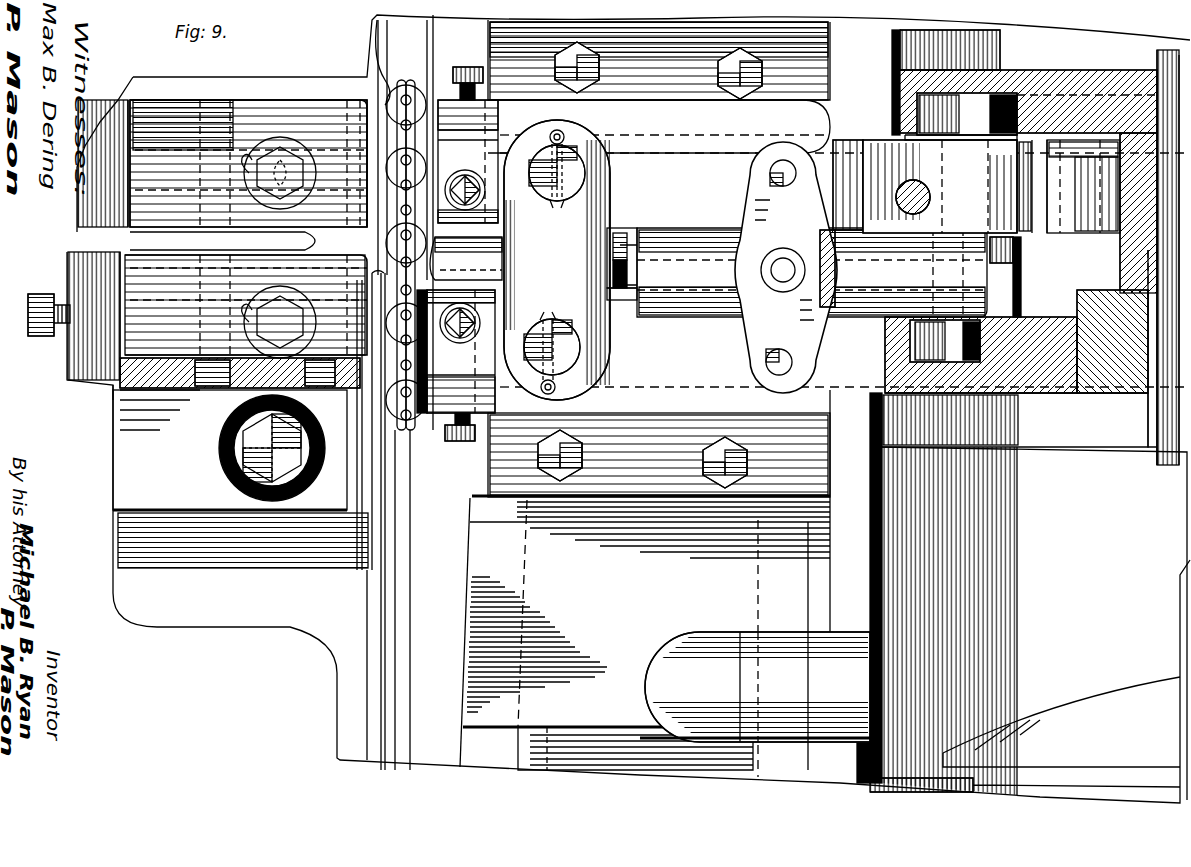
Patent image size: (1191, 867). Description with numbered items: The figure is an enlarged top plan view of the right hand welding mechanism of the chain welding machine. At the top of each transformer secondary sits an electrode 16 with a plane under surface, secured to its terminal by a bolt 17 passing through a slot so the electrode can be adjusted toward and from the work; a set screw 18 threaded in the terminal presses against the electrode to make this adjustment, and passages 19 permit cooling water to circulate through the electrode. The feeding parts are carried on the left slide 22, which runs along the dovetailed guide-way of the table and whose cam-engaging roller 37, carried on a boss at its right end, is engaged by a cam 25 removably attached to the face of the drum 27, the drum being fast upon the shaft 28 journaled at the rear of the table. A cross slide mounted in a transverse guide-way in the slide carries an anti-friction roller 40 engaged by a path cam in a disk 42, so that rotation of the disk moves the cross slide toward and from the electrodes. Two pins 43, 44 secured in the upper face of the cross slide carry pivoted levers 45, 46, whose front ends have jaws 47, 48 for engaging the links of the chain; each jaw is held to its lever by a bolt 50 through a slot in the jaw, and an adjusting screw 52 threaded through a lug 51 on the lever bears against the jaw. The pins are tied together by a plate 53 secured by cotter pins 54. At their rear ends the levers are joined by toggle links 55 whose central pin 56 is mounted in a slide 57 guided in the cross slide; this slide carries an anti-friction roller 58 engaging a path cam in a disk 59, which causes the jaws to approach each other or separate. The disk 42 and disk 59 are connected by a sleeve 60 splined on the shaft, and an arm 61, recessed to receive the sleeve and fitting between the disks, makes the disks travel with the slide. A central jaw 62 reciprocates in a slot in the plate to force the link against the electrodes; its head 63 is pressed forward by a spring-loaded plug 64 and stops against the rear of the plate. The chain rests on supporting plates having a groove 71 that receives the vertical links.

The electrode 16 is at (158, 120).
The bolt 17 is at (285, 150).
The set screw 18 is at (32, 336).
The passages 19 is at (235, 115).
The left slide 22 is at (475, 580).
The cam 25 is at (1090, 692).
The drum 27 is at (930, 542).
The shaft 28 is at (1155, 437).
The cam-engaging roller 37 is at (845, 645).
The anti-friction roller 40 is at (980, 110).
The disk 42 is at (1095, 90).
The pin 43 is at (550, 185).
The pin 44 is at (547, 338).
The lever 45 is at (762, 122).
The lever 46 is at (657, 413).
The jaw 47 is at (400, 225).
The jaw 48 is at (461, 351).
The bolt 50 is at (468, 176).
The lug 51 is at (492, 118).
The adjusting screw 52 is at (463, 67).
The plate 53 is at (596, 190).
The cotter pins 54 is at (548, 138).
The toggle links 55 is at (760, 190).
The central pin 56 is at (740, 265).
The slide 57 is at (905, 198).
The anti-friction roller 58 is at (935, 352).
The disk 59 is at (1068, 390).
The sleeve 60 is at (1128, 398).
The arm 61 is at (1080, 238).
The central jaw 62 is at (466, 258).
The head 63 is at (622, 248).
The plug 64 is at (622, 302).
The groove 71 is at (385, 580).